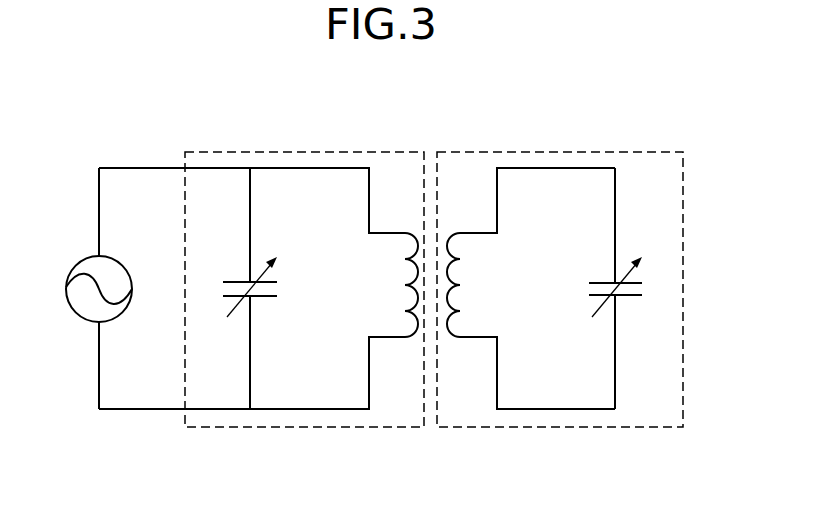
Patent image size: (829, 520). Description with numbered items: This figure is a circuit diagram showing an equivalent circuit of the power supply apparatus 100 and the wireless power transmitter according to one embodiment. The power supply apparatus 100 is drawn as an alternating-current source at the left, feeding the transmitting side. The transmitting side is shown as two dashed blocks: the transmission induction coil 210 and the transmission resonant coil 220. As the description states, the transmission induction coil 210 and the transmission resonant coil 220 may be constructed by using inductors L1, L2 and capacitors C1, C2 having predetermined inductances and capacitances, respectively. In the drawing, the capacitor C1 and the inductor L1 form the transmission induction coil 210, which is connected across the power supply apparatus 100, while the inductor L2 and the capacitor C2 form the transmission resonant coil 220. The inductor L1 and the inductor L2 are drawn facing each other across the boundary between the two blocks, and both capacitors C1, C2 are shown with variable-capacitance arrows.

The power supply apparatus 100 is at (73, 258).
The transmission induction coil 210 is at (333, 150).
The transmission resonant coil 220 is at (500, 150).
The capacitor C1 is at (237, 288).
The inductor L1 is at (334, 288).
The inductor L2 is at (531, 288).
The capacitor C2 is at (631, 288).